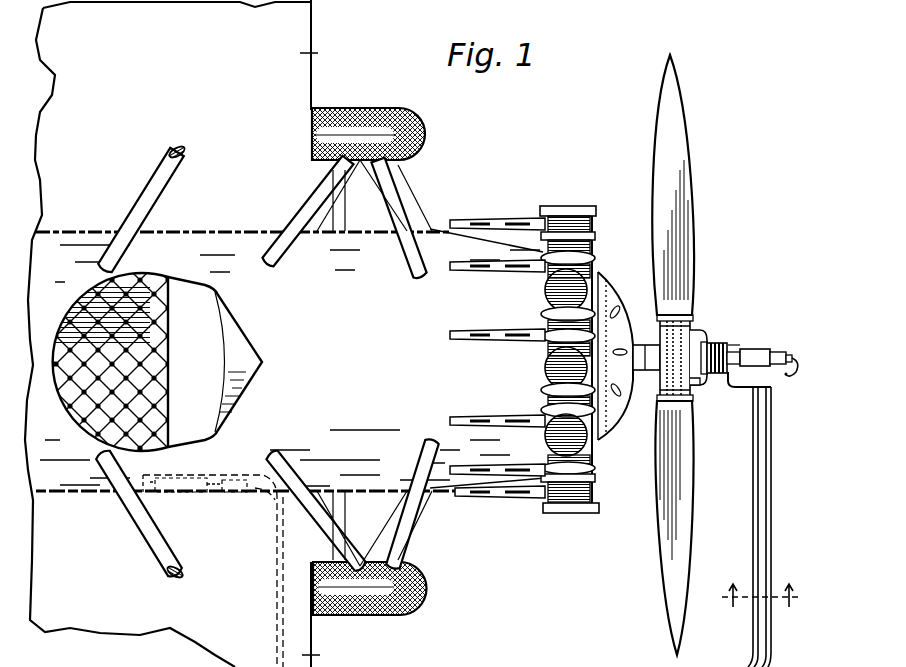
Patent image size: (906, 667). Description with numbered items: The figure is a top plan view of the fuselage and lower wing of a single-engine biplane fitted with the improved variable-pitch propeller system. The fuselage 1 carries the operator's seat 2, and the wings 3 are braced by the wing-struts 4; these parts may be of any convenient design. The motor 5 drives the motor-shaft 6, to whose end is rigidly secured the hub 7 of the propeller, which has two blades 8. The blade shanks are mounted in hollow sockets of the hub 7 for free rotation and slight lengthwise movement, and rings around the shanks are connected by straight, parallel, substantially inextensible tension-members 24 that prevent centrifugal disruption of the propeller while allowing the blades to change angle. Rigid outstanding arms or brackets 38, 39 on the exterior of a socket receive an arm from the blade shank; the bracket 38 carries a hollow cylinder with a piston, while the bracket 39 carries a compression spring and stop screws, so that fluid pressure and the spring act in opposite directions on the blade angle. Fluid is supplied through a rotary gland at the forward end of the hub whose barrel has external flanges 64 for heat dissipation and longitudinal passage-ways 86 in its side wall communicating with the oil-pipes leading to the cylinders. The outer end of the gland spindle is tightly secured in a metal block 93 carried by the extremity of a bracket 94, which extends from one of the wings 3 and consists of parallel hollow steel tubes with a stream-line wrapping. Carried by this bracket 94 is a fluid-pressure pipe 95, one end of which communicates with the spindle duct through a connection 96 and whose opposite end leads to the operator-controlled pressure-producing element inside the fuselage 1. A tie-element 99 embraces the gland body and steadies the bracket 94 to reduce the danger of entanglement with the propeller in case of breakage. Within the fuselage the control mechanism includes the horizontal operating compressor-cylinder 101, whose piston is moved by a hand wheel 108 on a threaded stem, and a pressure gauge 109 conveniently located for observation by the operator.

The fuselage 1 is at (290, 360).
The operator's seat 2 is at (156, 362).
The wings 3 is at (550, 333).
The wing-struts 4 is at (305, 207).
The motor 5 is at (582, 212).
The motor-shaft 6 is at (628, 378).
The hub 7 is at (653, 345).
The blades 8 is at (687, 167).
The tension-members 24 is at (658, 403).
The bracket 38 is at (697, 390).
The bracket 39 is at (693, 338).
The external flanges 64 is at (718, 350).
The longitudinal passage-ways 86 is at (743, 352).
The metal block 93 is at (762, 352).
The bracket 94 is at (768, 538).
The fluid-pressure pipe 95 is at (274, 553).
The connection 96 is at (787, 378).
The tie-element 99 is at (732, 390).
The compressor-cylinder 101 is at (190, 475).
The hand wheel 108 is at (167, 472).
The pressure gauge 109 is at (238, 476).